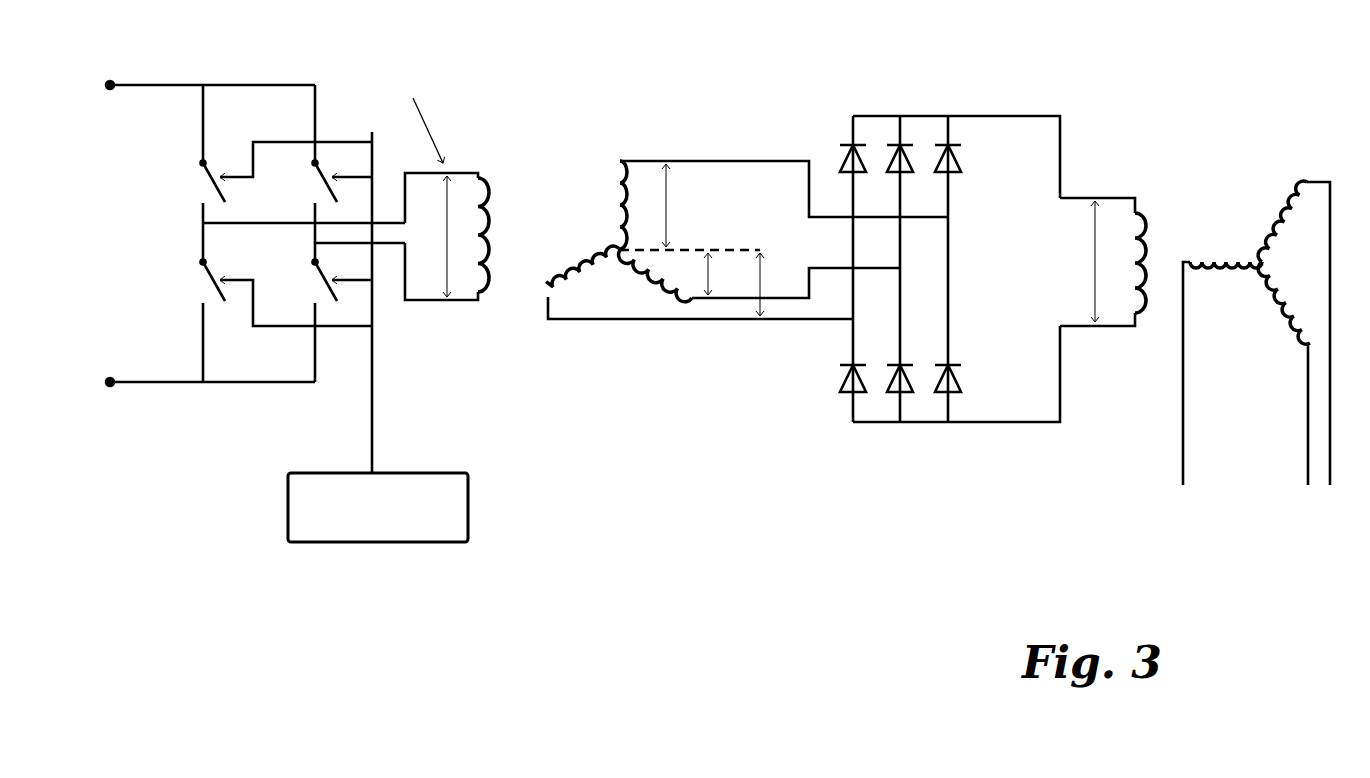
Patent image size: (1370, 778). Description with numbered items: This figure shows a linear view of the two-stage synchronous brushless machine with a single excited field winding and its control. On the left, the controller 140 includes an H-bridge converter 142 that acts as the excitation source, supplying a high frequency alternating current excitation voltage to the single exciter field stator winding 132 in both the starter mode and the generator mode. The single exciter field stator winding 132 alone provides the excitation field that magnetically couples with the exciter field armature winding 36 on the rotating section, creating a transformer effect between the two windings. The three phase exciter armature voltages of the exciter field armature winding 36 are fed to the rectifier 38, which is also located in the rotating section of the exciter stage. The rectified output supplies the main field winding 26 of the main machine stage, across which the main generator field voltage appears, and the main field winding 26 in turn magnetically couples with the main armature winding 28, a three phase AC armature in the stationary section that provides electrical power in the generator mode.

The H-bridge converter 142 is at (173, 432).
The controller 140 is at (468, 483).
The single exciter field stator winding 132 is at (466, 330).
The exciter field armature winding 36 is at (657, 351).
The rectifier 38 is at (843, 447).
The main field winding 26 is at (1129, 363).
The main armature winding 28 is at (1145, 486).